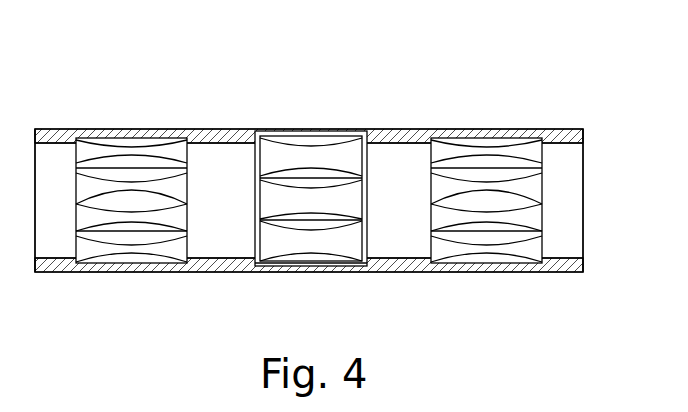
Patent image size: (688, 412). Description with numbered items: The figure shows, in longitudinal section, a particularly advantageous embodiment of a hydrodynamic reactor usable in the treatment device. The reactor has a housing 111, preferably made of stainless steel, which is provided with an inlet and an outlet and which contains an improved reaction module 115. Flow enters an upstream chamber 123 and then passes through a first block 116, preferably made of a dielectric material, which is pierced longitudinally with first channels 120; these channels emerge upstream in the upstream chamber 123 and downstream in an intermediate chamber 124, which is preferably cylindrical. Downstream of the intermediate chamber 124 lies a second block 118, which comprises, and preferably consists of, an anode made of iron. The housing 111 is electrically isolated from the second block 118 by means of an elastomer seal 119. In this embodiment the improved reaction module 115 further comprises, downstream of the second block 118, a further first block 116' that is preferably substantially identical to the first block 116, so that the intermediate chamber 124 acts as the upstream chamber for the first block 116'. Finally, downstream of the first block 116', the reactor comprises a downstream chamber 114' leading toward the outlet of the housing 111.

The housing 111 is at (230, 133).
The downstream chamber 114' is at (582, 230).
The improved reaction module 115 is at (540, 52).
The first block 116 is at (131, 234).
The first block 116' is at (486, 234).
The second block 118 is at (317, 267).
The elastomer seal 119 is at (288, 131).
The first channels 120 is at (165, 150).
The upstream chamber 123 is at (50, 247).
The intermediate chamber 124 is at (215, 248).